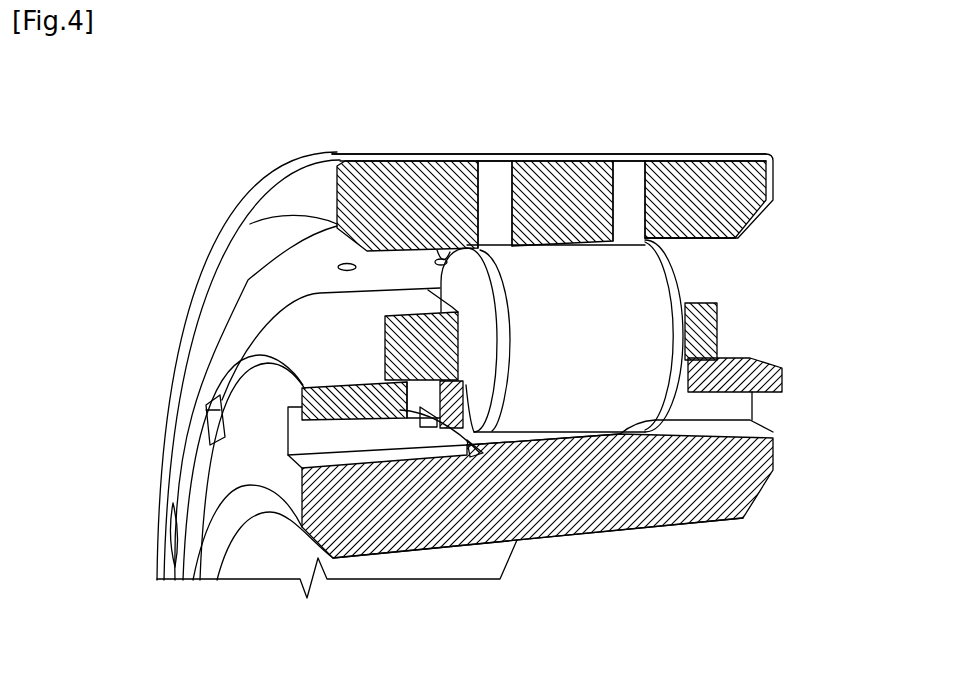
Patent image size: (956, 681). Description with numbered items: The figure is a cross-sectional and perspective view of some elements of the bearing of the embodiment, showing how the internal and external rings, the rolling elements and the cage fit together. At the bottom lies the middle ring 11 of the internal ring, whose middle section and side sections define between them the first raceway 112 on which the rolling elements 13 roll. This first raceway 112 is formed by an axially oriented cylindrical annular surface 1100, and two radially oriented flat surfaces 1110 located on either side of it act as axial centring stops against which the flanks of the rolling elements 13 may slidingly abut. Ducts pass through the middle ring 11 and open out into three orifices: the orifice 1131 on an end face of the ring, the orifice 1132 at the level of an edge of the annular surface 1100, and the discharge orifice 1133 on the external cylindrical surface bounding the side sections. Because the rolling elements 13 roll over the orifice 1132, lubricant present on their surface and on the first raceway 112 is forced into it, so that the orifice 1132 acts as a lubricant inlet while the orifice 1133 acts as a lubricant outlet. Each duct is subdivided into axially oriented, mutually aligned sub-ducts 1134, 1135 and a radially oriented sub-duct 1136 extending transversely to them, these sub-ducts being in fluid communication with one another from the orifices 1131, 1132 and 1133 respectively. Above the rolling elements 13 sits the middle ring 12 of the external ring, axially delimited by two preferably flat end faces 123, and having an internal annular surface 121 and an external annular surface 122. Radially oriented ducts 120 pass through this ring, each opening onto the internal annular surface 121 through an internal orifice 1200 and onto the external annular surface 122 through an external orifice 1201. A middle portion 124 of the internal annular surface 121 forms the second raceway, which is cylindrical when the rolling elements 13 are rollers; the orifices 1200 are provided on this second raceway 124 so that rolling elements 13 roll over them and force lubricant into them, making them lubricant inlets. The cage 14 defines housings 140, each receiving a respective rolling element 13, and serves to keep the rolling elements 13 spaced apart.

The middle ring 11 is at (777, 469).
The middle ring 12 is at (774, 183).
The rolling element 13 is at (679, 278).
The cage 14 is at (722, 330).
The first raceway 112 is at (532, 445).
The duct 120 is at (493, 200).
The internal annular surface 121 is at (702, 240).
The external annular surface 122 is at (697, 153).
The end face 123 is at (260, 211).
The second raceway 124 is at (571, 252).
The housing 140 is at (330, 292).
The cylindrical annular surface 1100 is at (571, 478).
The flat surface 1110 is at (380, 452).
The orifice 1131 is at (768, 426).
The orifice 1132 is at (470, 460).
The discharge orifice 1133 is at (385, 347).
The sub-duct 1134 is at (782, 377).
The sub-duct 1135 is at (428, 430).
The sub-duct 1136 is at (345, 428).
The internal orifice 1200 is at (347, 262).
The external orifice 1201 is at (500, 153).